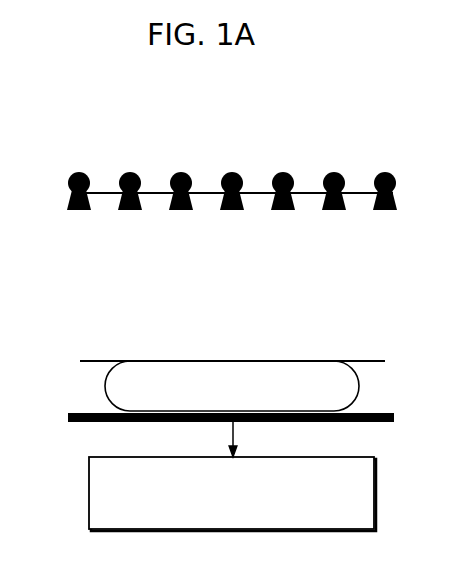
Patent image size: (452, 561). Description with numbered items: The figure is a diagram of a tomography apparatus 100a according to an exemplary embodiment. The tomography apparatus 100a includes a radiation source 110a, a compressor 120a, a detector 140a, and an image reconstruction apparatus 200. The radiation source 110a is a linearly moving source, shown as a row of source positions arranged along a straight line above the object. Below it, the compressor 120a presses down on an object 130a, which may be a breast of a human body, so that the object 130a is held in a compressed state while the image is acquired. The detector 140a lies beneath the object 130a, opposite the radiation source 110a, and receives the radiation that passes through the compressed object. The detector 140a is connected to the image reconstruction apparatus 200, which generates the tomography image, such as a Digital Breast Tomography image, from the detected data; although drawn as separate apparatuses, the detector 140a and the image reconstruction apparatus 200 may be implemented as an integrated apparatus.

The tomography apparatus 100a is at (237, 149).
The radiation source 110a is at (77, 211).
The compressor 120a is at (98, 361).
The object 130a is at (105, 380).
The detector 140a is at (77, 424).
The image reconstruction apparatus 200 is at (89, 477).